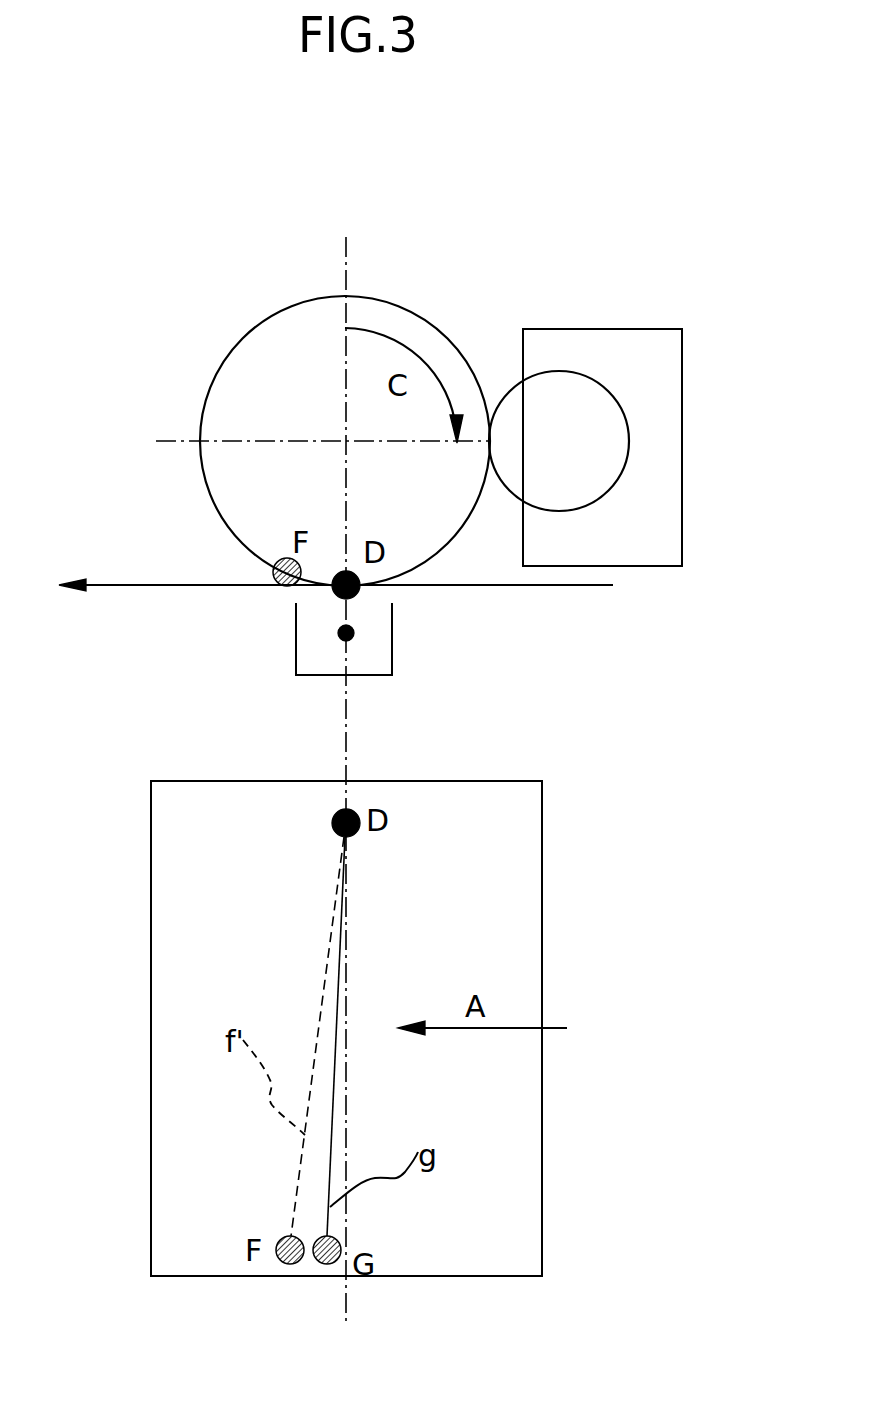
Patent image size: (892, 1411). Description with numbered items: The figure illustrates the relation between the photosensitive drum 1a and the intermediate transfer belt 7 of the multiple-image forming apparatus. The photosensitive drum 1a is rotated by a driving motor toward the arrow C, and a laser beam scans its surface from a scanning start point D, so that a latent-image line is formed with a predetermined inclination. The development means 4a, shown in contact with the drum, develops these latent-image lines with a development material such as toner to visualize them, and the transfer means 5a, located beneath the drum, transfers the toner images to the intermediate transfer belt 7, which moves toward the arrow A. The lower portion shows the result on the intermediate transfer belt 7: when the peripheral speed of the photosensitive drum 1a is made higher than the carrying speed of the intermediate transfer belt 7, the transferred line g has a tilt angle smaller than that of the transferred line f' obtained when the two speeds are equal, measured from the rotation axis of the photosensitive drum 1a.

The photosensitive drum 1a is at (227, 378).
The development means 4a is at (677, 285).
The transfer means 5a is at (377, 650).
The intermediate transfer belt 7 is at (529, 585).